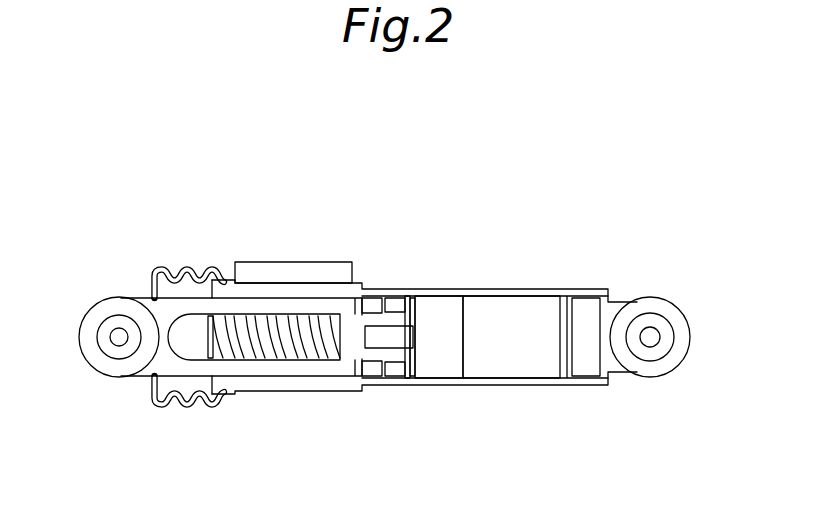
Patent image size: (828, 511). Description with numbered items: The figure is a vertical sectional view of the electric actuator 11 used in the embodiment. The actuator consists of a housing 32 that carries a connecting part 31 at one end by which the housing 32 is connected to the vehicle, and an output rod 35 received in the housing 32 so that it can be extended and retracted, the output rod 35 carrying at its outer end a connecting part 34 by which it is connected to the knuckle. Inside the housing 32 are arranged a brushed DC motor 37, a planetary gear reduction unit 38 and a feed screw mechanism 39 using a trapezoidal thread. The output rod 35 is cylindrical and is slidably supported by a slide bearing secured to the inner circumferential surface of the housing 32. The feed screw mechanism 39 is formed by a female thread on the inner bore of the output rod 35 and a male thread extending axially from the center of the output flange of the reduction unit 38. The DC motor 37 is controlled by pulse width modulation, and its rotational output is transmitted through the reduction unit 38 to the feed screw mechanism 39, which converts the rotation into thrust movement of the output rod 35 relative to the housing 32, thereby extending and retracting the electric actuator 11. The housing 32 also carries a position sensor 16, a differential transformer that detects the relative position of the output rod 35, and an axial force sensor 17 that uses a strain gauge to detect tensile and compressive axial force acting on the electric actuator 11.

The electric actuator 11 is at (513, 200).
The position sensor 16 is at (290, 262).
The axial force sensor 17 is at (587, 300).
The connecting part 31 is at (672, 303).
The housing 32 is at (362, 285).
The connecting part 34 is at (92, 307).
The output rod 35 is at (177, 375).
The brushed DC motor 37 is at (512, 367).
The planetary gear reduction unit 38 is at (441, 367).
The feed screw mechanism 39 is at (284, 386).